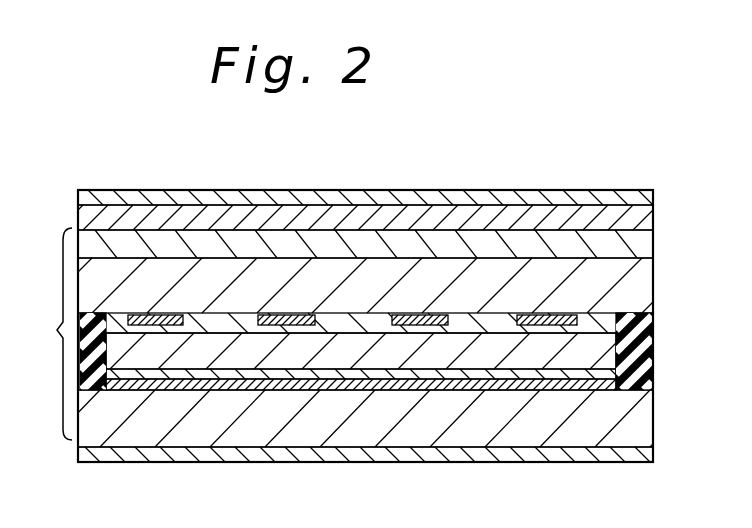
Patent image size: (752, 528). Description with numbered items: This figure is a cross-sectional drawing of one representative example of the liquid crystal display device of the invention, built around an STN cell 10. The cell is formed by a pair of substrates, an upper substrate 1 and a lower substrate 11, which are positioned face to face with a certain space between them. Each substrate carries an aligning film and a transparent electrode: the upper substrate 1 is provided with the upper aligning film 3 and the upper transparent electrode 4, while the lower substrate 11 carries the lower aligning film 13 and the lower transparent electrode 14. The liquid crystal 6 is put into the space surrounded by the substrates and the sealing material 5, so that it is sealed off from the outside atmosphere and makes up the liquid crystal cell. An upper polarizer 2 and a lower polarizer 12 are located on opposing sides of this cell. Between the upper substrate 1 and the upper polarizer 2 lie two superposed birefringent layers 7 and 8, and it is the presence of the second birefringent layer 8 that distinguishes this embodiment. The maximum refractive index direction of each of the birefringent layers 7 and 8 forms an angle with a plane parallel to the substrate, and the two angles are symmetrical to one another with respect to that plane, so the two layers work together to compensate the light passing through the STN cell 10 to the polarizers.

The upper substrate 1 is at (630, 292).
The upper polarizer 2 is at (620, 202).
The upper aligning film 3 is at (482, 327).
The upper transparent electrode 4 is at (550, 315).
The sealing material 5 is at (98, 330).
The liquid crystal 6 is at (177, 358).
The birefringent layer 7 is at (633, 248).
The birefringent layer 8 is at (638, 218).
The STN cell 10 is at (50, 348).
The lower substrate 11 is at (637, 427).
The lower polarizer 12 is at (578, 455).
The lower aligning film 13 is at (600, 377).
The lower transparent electrode 14 is at (393, 385).